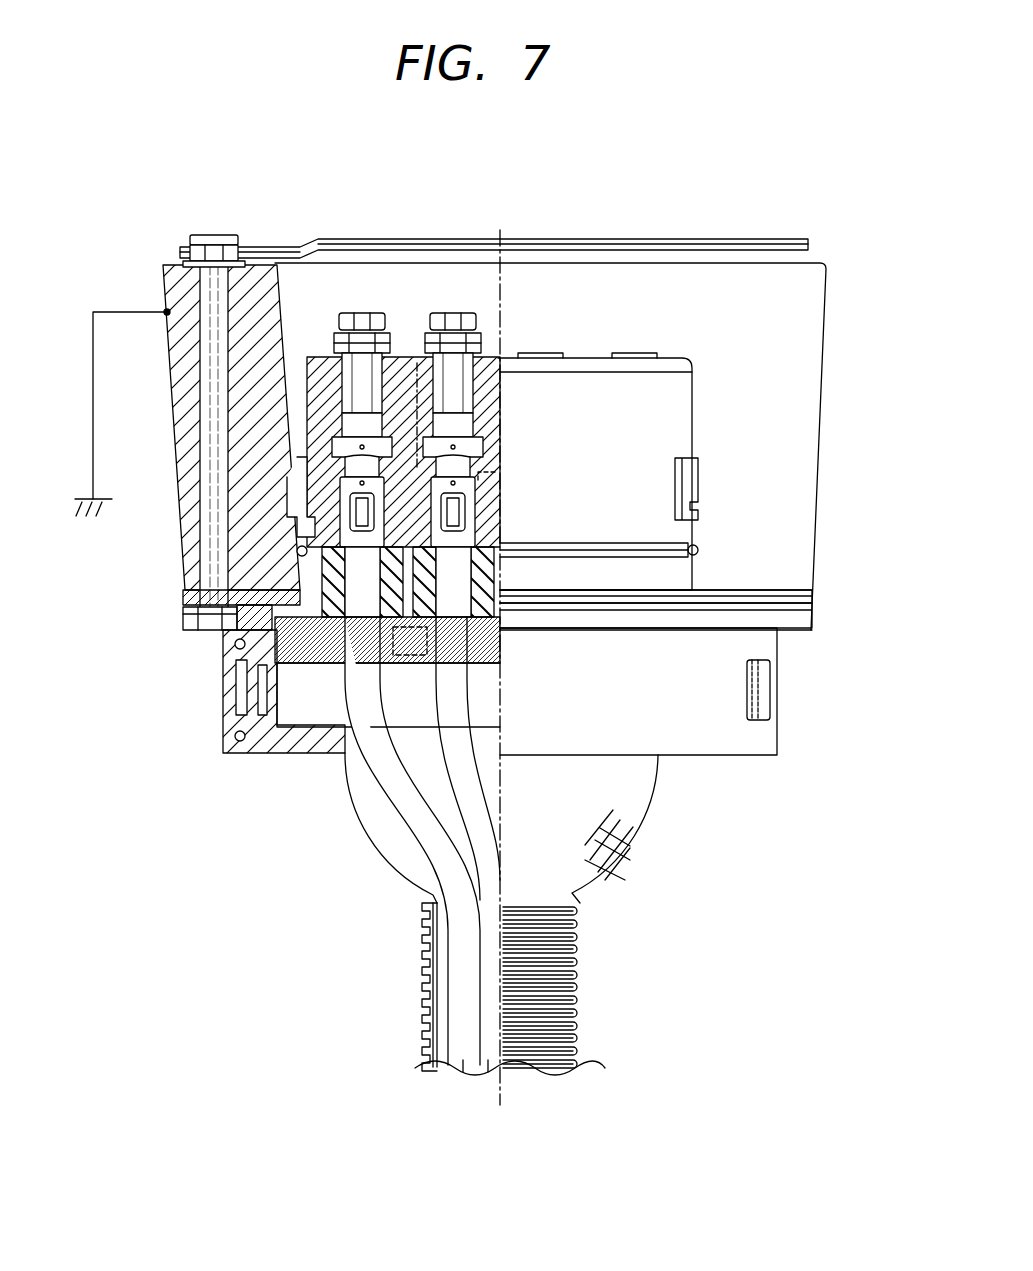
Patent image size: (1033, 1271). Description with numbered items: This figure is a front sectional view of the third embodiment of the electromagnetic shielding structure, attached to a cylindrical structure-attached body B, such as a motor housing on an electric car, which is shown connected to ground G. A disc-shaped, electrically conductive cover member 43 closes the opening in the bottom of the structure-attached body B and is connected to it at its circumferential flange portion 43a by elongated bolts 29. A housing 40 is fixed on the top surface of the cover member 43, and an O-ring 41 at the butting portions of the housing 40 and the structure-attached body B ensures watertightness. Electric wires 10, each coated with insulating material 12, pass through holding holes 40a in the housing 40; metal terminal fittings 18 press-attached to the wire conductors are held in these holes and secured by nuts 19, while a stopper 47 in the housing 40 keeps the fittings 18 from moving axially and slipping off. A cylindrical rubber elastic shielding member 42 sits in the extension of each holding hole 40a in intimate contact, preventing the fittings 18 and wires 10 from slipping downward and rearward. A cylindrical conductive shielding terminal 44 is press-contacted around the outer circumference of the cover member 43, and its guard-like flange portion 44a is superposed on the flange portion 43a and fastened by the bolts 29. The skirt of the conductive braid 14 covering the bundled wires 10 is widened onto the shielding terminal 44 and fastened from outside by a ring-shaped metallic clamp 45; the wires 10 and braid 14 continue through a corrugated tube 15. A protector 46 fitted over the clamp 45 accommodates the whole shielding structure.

The structure-attached body B is at (168, 408).
The ground G is at (109, 412).
The bolt 29 is at (219, 233).
The terminal nut 19 is at (357, 320).
The housing 40 is at (398, 363).
The stopper 47 is at (417, 363).
The metal terminal fitting 18 is at (500, 473).
The holding hole 40a is at (498, 510).
The O-ring 41 is at (296, 553).
The flange portion 43a is at (183, 598).
The flange portion 44a is at (257, 610).
The shielding terminal 44 is at (260, 677).
The clamp 45 is at (250, 712).
The protector 46 is at (227, 743).
The elastic shielding member 42 is at (318, 613).
The cover member 43 is at (331, 657).
The braid 14 is at (358, 823).
The electric wire 10 is at (465, 843).
The corrugated tube 15 is at (585, 967).
The insulating material 12 is at (493, 1057).